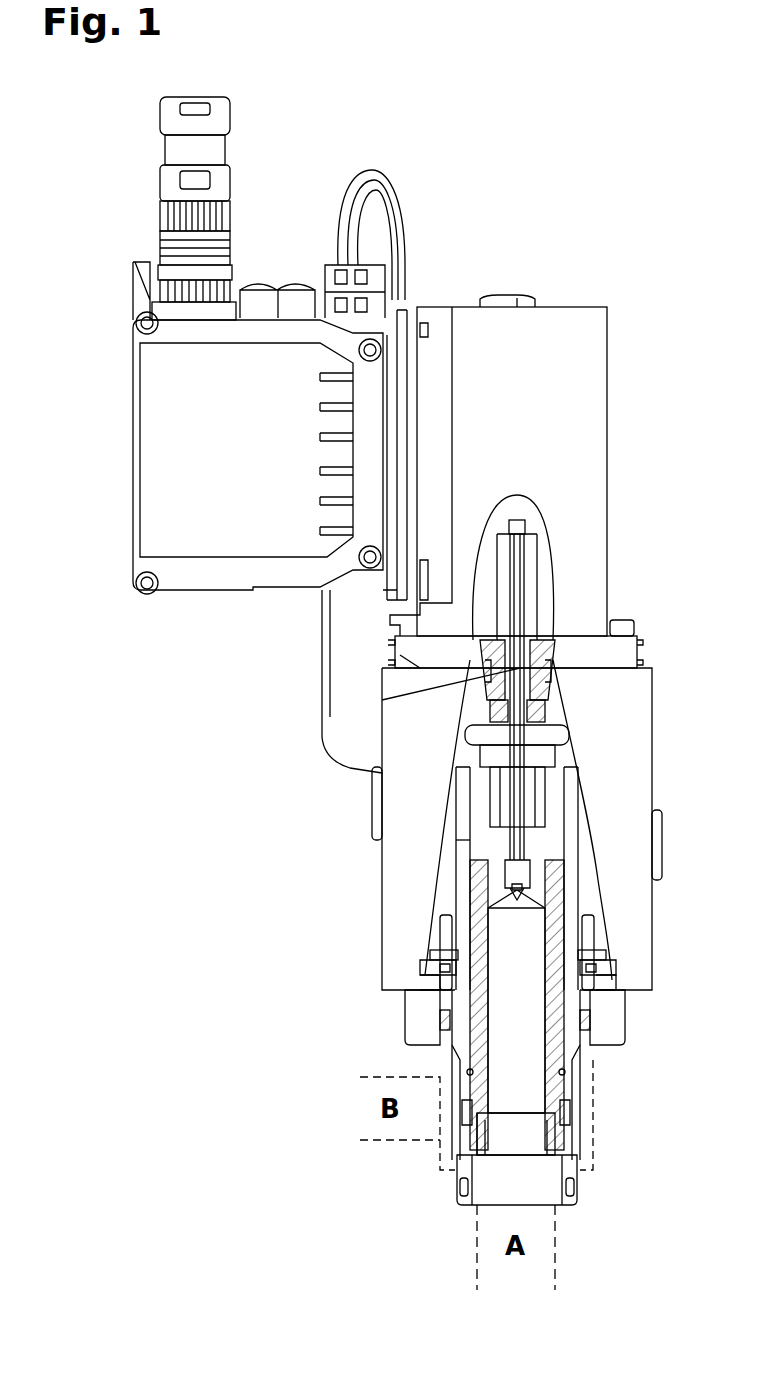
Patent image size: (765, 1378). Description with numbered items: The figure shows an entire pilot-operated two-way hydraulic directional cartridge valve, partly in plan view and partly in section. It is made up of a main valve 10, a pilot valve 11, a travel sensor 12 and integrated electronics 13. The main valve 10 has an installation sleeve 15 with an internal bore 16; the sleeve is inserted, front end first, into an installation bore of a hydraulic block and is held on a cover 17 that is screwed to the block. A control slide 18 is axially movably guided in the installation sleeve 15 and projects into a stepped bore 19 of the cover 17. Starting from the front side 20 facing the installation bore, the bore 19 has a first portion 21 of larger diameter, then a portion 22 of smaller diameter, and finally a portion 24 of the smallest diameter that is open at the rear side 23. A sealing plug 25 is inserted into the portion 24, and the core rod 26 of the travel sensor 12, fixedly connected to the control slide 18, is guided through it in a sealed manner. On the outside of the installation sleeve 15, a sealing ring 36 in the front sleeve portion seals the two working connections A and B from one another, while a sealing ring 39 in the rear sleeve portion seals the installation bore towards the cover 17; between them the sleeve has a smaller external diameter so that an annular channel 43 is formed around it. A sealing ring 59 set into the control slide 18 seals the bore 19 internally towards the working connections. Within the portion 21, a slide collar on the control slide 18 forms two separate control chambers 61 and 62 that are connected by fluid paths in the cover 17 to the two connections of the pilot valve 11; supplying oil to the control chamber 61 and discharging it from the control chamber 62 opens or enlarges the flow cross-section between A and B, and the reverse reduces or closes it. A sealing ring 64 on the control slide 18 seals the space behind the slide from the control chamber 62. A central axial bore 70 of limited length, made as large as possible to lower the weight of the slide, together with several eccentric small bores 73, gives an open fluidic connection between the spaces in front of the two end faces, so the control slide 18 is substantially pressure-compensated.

The main valve 10 is at (340, 891).
The pilot valve 11 is at (355, 727).
The travel sensor 12 is at (530, 568).
The integrated electronics 13 is at (152, 518).
The installation sleeve 15 is at (460, 1053).
The internal bore 16 is at (420, 1030).
The cover 17 is at (630, 690).
The control slide 18 is at (445, 950).
The bore 19 is at (445, 940).
The front side 20 is at (625, 990).
The first portion 21 is at (470, 858).
The portion having a smaller diameter 22 is at (480, 757).
The rear side 23 is at (395, 652).
The portion having the smallest diameter 24 is at (480, 680).
The sealing plug 25 is at (600, 650).
The core rod 26 is at (565, 750).
The sealing ring 36 is at (580, 1180).
The sealing ring 39 is at (605, 1020).
The annular channel 43 is at (585, 1125).
The sealing ring 59 is at (570, 1062).
The control chamber 61 is at (575, 945).
The control chamber 62 is at (575, 860).
The sealing ring 64 is at (560, 785).
The central axial bore 70 is at (510, 1000).
The small bores 73 is at (530, 830).